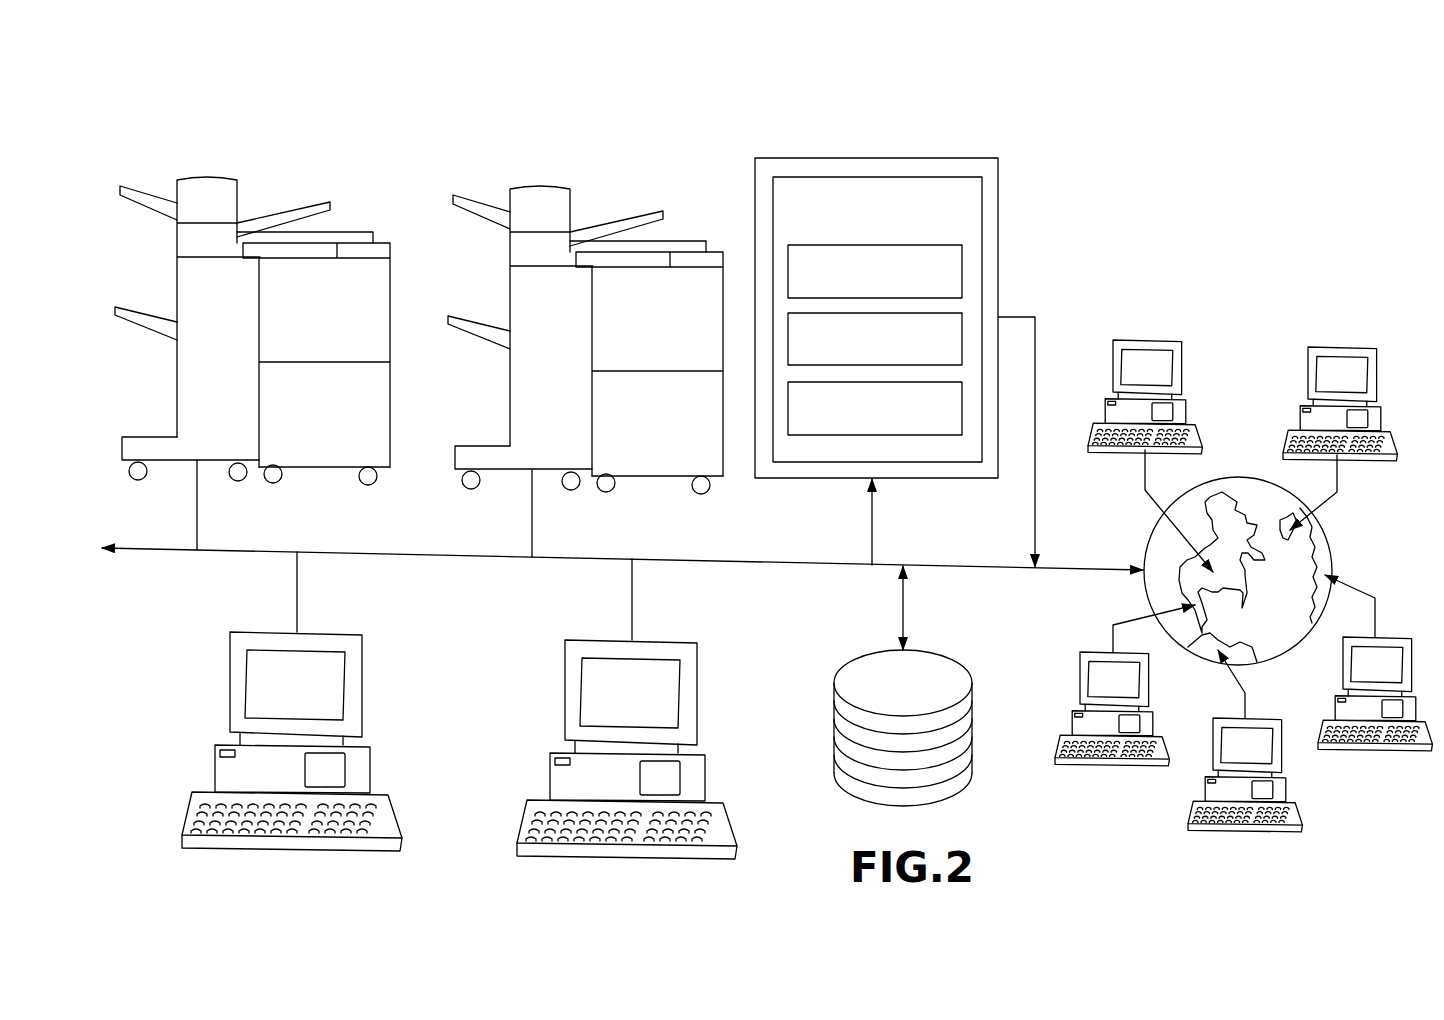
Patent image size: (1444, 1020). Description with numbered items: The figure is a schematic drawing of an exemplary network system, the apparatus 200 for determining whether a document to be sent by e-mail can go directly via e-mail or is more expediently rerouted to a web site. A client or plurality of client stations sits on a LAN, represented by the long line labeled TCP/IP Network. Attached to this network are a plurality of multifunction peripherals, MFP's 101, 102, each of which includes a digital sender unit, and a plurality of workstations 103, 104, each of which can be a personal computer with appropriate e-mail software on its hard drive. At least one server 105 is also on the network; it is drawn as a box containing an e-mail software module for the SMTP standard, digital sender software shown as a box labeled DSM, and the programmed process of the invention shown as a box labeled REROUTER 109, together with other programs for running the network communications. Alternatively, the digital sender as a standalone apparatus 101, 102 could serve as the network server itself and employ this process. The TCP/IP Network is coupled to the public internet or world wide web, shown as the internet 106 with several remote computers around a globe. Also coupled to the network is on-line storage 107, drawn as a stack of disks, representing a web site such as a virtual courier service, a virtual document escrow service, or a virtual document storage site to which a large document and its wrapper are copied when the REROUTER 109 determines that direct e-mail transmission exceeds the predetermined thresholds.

The MFP 101 is at (252, 317).
The MFP 102 is at (585, 322).
The workstation 103 is at (389, 691).
The workstation 104 is at (721, 701).
The server 105 is at (895, 334).
The internet 106 is at (1397, 361).
The on-line storage 107 is at (955, 660).
The REROUTER 109 is at (838, 245).
The apparatus 200 is at (1185, 122).